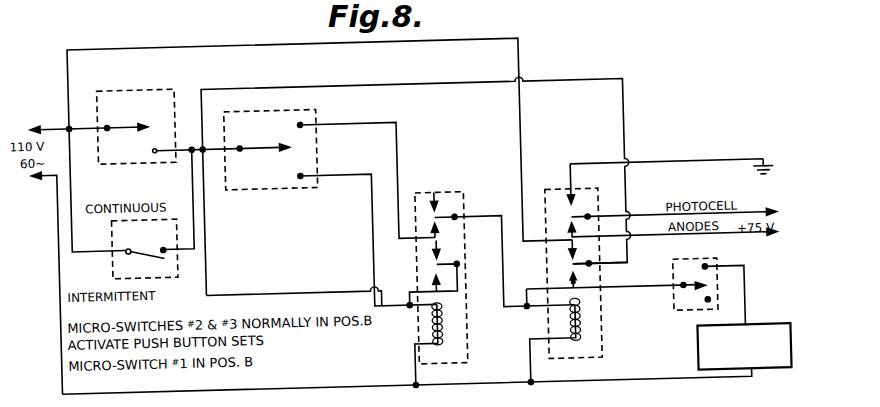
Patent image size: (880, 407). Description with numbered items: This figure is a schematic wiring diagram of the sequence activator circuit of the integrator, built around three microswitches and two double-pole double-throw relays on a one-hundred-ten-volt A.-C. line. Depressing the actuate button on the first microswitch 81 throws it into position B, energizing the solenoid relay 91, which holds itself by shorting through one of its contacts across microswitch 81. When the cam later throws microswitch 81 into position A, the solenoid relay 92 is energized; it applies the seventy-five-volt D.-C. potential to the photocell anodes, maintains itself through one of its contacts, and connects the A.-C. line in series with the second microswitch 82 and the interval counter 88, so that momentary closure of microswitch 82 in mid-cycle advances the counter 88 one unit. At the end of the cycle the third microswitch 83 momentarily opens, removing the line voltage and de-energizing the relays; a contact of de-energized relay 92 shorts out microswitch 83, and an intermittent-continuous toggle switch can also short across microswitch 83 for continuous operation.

The first microswitch 81 is at (222, 190).
The second microswitch 82 is at (686, 276).
The third microswitch 83 is at (114, 89).
The interval counter 88 is at (690, 364).
The solenoid relay 91 is at (459, 364).
The solenoid relay 92 is at (593, 337).